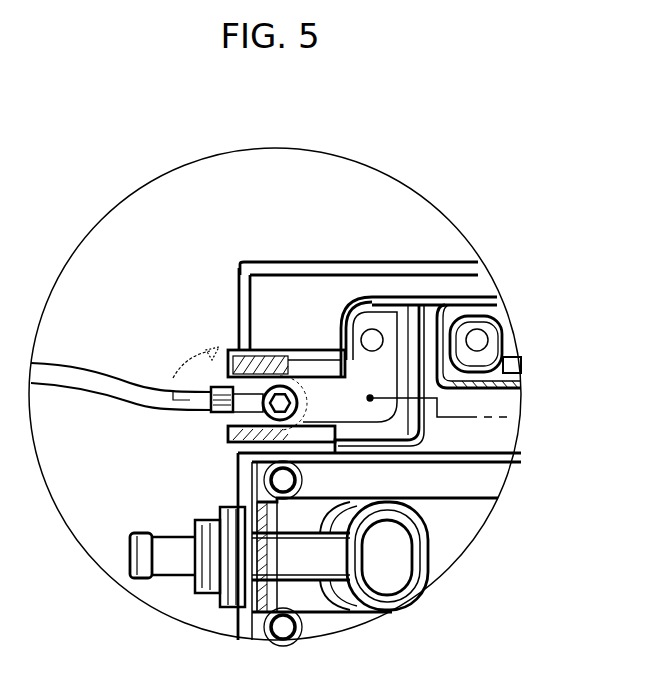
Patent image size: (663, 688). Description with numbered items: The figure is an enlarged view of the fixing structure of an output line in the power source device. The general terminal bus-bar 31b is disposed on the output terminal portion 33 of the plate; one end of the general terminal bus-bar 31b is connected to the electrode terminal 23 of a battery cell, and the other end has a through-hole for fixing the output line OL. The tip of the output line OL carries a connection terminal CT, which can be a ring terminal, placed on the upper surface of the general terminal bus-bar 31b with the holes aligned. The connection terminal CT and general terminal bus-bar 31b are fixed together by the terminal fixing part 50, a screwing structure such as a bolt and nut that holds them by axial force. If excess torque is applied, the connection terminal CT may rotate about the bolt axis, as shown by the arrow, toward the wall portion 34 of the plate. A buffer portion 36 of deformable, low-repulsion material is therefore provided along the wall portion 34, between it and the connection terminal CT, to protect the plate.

The electrode terminal 23 is at (374, 336).
The general terminal bus-bar 31b is at (372, 297).
The output terminal portion 33 is at (436, 432).
The wall portion 34 is at (275, 343).
The buffer portion 36 is at (233, 348).
The terminal fixing part 50 is at (298, 373).
The output line OL is at (78, 370).
The connection terminal CT is at (224, 440).